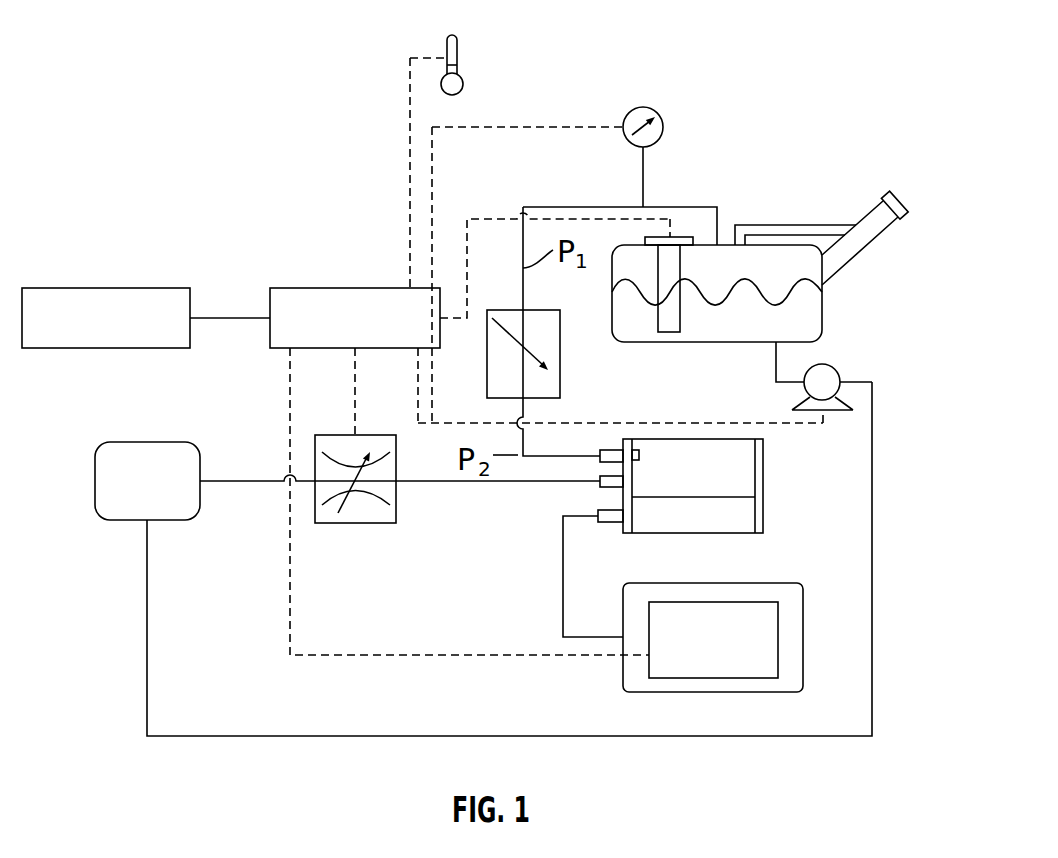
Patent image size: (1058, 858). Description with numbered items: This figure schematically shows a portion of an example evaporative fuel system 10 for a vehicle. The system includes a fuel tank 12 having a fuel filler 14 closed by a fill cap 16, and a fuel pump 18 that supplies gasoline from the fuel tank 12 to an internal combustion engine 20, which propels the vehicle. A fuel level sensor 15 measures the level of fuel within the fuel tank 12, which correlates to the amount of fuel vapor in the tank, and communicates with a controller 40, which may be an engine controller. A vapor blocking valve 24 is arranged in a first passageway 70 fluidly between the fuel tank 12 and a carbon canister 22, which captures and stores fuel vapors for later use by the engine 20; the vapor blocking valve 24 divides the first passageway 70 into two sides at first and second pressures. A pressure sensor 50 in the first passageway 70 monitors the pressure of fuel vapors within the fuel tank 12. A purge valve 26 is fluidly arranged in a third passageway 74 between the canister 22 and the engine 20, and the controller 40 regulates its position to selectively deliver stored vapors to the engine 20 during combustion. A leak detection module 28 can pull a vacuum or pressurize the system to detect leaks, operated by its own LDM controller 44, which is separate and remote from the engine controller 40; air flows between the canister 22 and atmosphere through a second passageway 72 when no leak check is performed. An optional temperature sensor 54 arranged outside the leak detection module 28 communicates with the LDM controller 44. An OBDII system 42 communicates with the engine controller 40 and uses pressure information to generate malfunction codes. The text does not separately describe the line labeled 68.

The evaporative fuel system 10 is at (380, 217).
The fuel tank 12 is at (750, 334).
The fuel filler 14 is at (862, 237).
The fuel level sensor 15 is at (658, 320).
The fill cap 16 is at (897, 197).
The fuel pump 18 is at (838, 372).
The internal combustion engine 20 is at (162, 499).
The carbon canister 22 is at (708, 484).
The vapor blocking valve 24 is at (560, 353).
The purge valve 26 is at (355, 523).
The leak detection module 28 is at (774, 575).
The controller 40 is at (325, 288).
The OBDII system 42 is at (72, 288).
The LDM controller 44 is at (778, 648).
The pressure sensor 50 is at (663, 127).
The temperature sensor 54 is at (458, 50).
The signal line 68 is at (375, 648).
The first passageway 70 is at (547, 194).
The second passageway 72 is at (569, 580).
The third passageway 74 is at (434, 488).